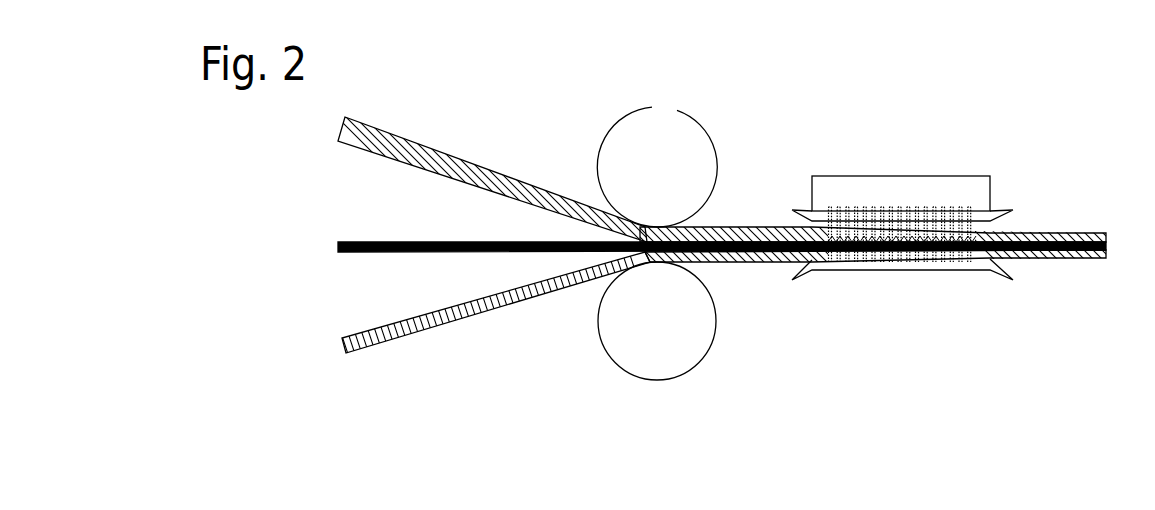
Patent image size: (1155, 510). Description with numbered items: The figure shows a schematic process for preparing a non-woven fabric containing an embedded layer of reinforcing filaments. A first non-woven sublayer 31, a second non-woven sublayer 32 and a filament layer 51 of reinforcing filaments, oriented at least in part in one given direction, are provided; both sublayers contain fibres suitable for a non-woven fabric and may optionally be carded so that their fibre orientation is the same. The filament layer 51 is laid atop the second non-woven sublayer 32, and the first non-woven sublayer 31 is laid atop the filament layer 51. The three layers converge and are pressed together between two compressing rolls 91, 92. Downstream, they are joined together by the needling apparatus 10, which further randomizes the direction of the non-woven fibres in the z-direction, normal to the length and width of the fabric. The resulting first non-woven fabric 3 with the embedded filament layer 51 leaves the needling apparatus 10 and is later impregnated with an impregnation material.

The first non-woven fabric 3 is at (1050, 235).
The needling apparatus 10 is at (903, 176).
The first non-woven sublayer 31 is at (447, 148).
The second non-woven sublayer 32 is at (450, 312).
The filament layer 51 is at (340, 249).
The compressing roll 91 is at (648, 145).
The compressing roll 92 is at (668, 315).